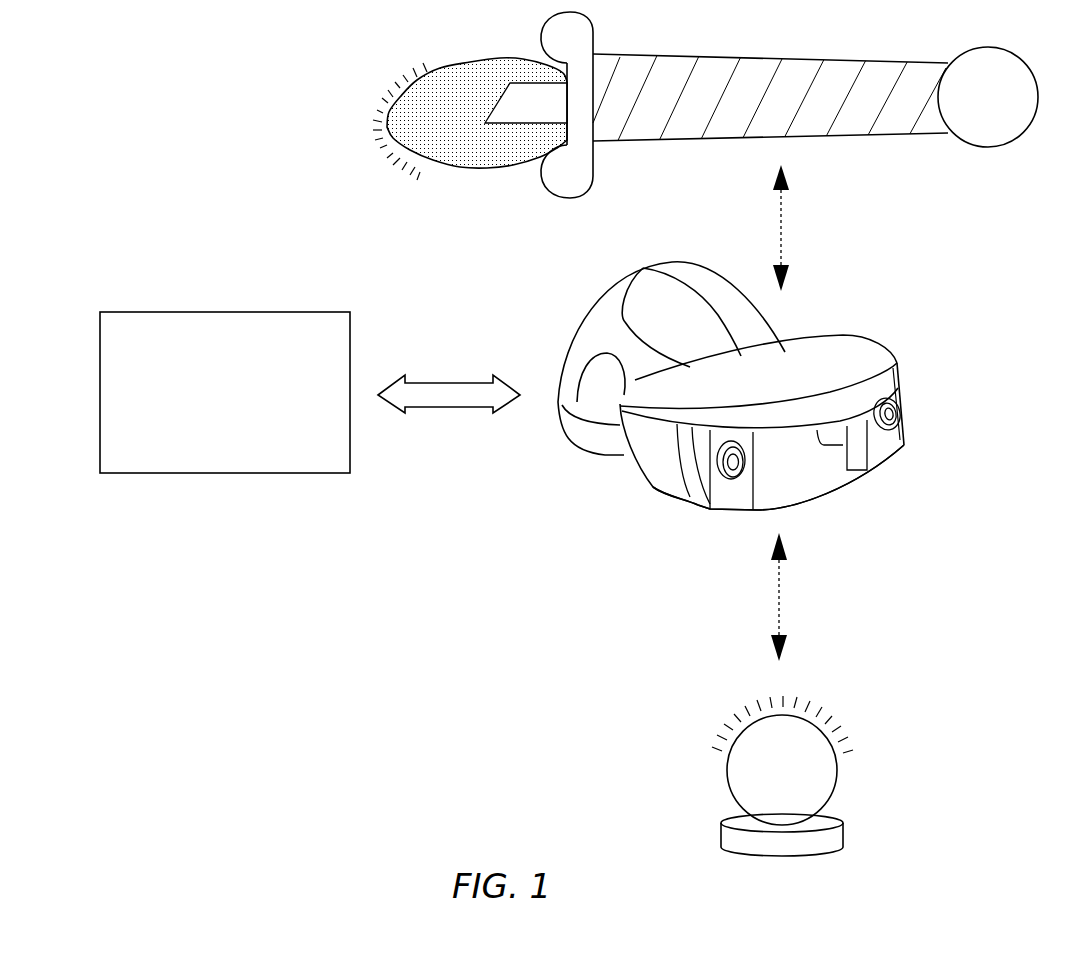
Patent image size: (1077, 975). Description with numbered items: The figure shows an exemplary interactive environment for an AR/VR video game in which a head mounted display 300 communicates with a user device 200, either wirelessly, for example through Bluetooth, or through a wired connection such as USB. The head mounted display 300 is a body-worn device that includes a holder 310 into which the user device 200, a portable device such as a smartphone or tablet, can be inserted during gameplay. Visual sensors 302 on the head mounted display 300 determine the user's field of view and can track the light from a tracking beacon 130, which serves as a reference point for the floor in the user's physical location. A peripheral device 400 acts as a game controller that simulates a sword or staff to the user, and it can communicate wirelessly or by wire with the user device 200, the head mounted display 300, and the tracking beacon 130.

The peripheral device 400 is at (834, 60).
The head mounted display 300 is at (807, 410).
The visual sensors 302 is at (743, 460).
The holder 310 is at (813, 521).
The user device 200 is at (225, 392).
The tracking beacon 130 is at (843, 835).